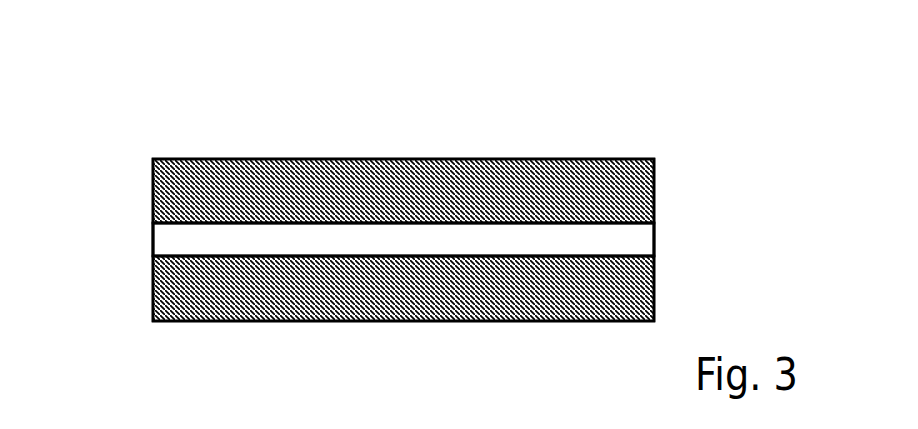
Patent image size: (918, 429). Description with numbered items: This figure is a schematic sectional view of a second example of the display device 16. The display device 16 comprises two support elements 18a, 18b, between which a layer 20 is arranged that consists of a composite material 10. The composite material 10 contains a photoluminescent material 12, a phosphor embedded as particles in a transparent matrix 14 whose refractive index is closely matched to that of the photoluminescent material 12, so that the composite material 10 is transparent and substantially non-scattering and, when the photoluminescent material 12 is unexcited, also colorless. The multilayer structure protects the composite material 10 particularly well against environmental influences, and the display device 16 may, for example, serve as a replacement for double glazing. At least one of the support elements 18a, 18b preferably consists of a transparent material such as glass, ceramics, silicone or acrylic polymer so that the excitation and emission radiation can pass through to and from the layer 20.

The composite material 10 is at (140, 235).
The photoluminescent material 12 is at (518, 243).
The transparent matrix 14 is at (270, 240).
The display device 16 is at (643, 85).
The support element 18a is at (377, 192).
The support element 18b is at (377, 290).
The layer 20 is at (663, 239).